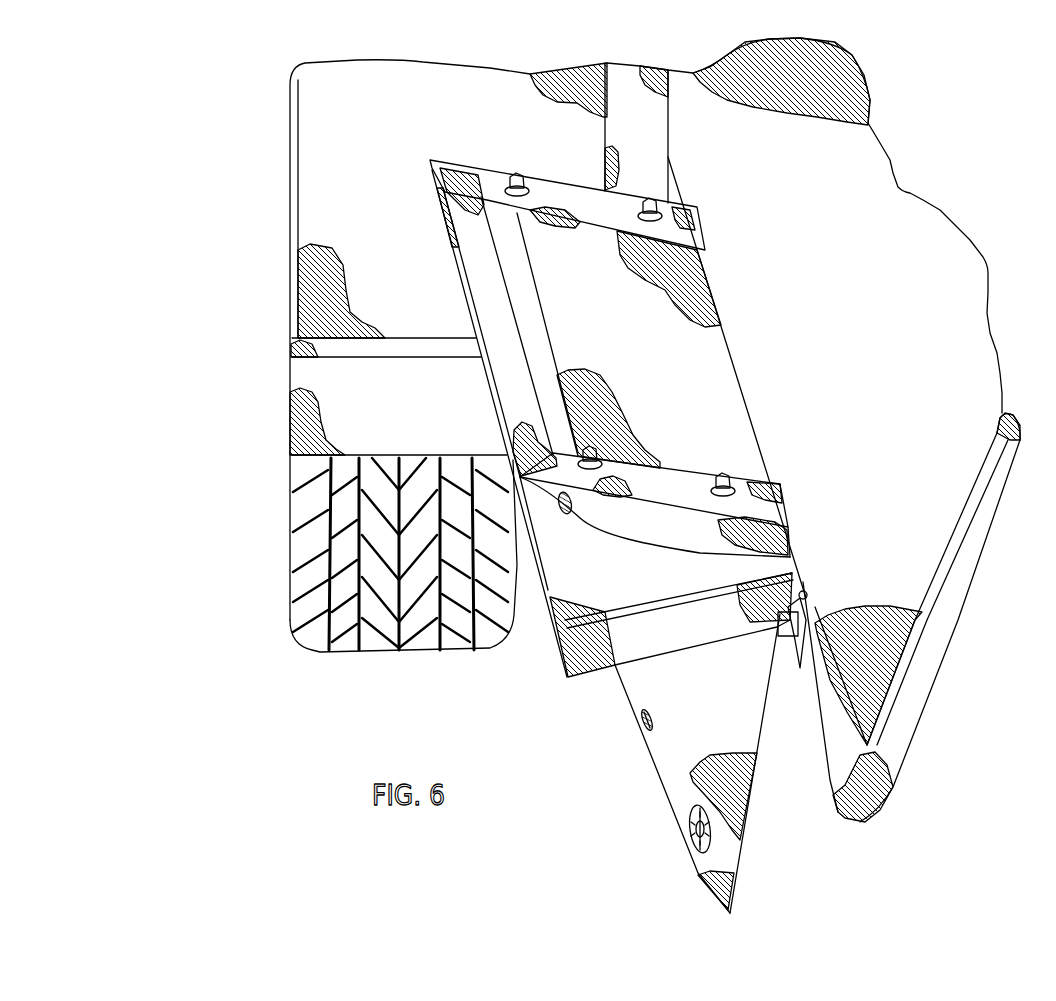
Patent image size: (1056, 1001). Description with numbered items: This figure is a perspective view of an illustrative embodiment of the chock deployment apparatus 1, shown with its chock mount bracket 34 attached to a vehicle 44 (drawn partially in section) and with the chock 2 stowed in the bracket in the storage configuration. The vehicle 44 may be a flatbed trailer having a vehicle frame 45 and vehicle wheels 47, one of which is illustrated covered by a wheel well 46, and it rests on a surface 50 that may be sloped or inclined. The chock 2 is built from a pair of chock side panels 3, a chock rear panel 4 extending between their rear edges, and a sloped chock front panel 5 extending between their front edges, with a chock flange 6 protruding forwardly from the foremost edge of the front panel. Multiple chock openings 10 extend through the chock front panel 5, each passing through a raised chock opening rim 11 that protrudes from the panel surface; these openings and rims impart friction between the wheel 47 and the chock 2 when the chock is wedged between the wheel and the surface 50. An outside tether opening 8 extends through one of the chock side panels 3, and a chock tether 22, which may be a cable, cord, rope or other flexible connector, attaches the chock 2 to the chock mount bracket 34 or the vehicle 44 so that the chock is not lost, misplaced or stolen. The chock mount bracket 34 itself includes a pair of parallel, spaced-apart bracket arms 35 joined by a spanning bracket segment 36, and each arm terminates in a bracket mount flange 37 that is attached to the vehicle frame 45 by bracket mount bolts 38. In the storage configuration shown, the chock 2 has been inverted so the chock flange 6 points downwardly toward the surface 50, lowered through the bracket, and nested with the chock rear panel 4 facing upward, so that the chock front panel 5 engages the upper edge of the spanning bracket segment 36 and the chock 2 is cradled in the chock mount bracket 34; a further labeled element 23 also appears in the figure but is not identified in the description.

The chock deployment apparatus 1 is at (424, 130).
The chock 2 is at (764, 765).
The chock side panels 3 is at (727, 703).
The chock rear panel 4 is at (700, 388).
The chock front panel 5 is at (577, 580).
The chock flange 6 is at (672, 775).
The outside tether opening 8 is at (572, 496).
The chock openings 10 is at (640, 725).
The raised chock opening rim 11 is at (640, 710).
The chock tether 22 is at (695, 552).
The pivot 23 is at (807, 597).
The chock mount bracket 34 is at (590, 676).
The bracket arms 35 is at (738, 632).
The spanning bracket segment 36 is at (543, 577).
The bracket mount flanges 37 is at (800, 650).
The bracket mount bolts 38 is at (783, 623).
The vehicle 44 is at (828, 802).
The vehicle frame 45 is at (830, 745).
The wheel well 46 is at (313, 193).
The wheel 47 is at (302, 518).
The surface 50 is at (464, 753).